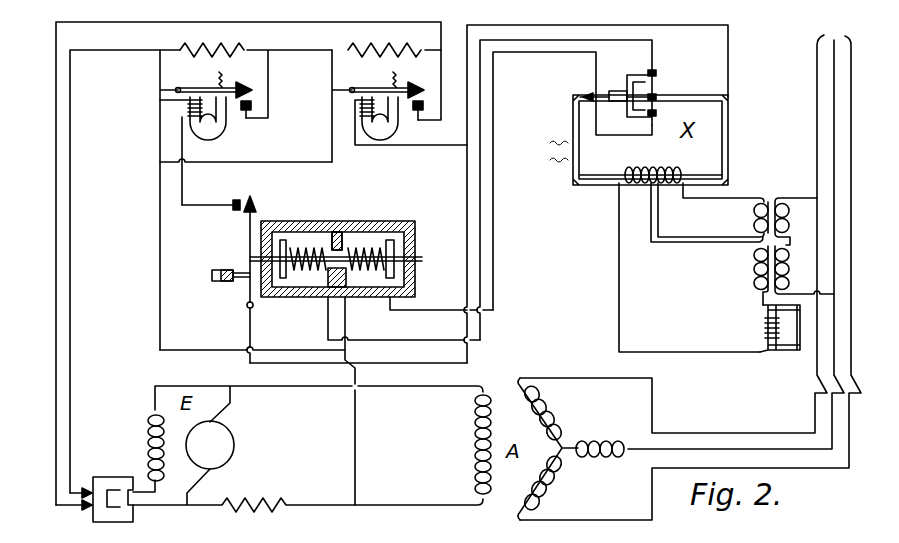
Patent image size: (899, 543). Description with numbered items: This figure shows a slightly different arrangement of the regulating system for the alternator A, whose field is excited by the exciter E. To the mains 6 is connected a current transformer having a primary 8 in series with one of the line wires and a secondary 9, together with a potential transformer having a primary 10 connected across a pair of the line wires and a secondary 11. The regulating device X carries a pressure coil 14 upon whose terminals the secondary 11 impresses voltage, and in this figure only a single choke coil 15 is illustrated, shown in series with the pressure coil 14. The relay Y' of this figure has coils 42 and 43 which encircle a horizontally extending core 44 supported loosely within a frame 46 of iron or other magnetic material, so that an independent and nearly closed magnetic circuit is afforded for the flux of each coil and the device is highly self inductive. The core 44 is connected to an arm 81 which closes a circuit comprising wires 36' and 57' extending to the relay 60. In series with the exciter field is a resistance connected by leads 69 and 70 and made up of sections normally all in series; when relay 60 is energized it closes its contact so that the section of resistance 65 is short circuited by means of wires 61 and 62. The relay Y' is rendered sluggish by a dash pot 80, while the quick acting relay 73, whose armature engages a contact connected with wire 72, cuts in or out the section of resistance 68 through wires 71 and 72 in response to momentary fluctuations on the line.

The mains 6 is at (690, 270).
The primary of current transformer 8 is at (790, 210).
The secondary of current transformer 9 is at (752, 214).
The primary of potential transformer 10 is at (800, 257).
The secondary of potential transformer 11 is at (755, 266).
The pressure coil 14 is at (646, 162).
The choke coil 15 is at (765, 327).
The wire 36' is at (140, 244).
The coil of relay 42 is at (360, 290).
The coil of relay 43 is at (300, 248).
The core 44 is at (342, 256).
The frame 46 is at (380, 222).
The wire 57' is at (211, 192).
The relay 60 is at (190, 107).
The wire 61 is at (160, 70).
The wire 62 is at (275, 74).
The section of resistance 65 is at (212, 41).
The section of resistance 68 is at (384, 41).
The lead 69 is at (56, 398).
The lead 70 is at (70, 412).
The wire 71 is at (335, 74).
The wire 72 is at (446, 77).
The relay 73 is at (362, 108).
The dash pot 80 is at (214, 283).
The arm 81 is at (250, 240).